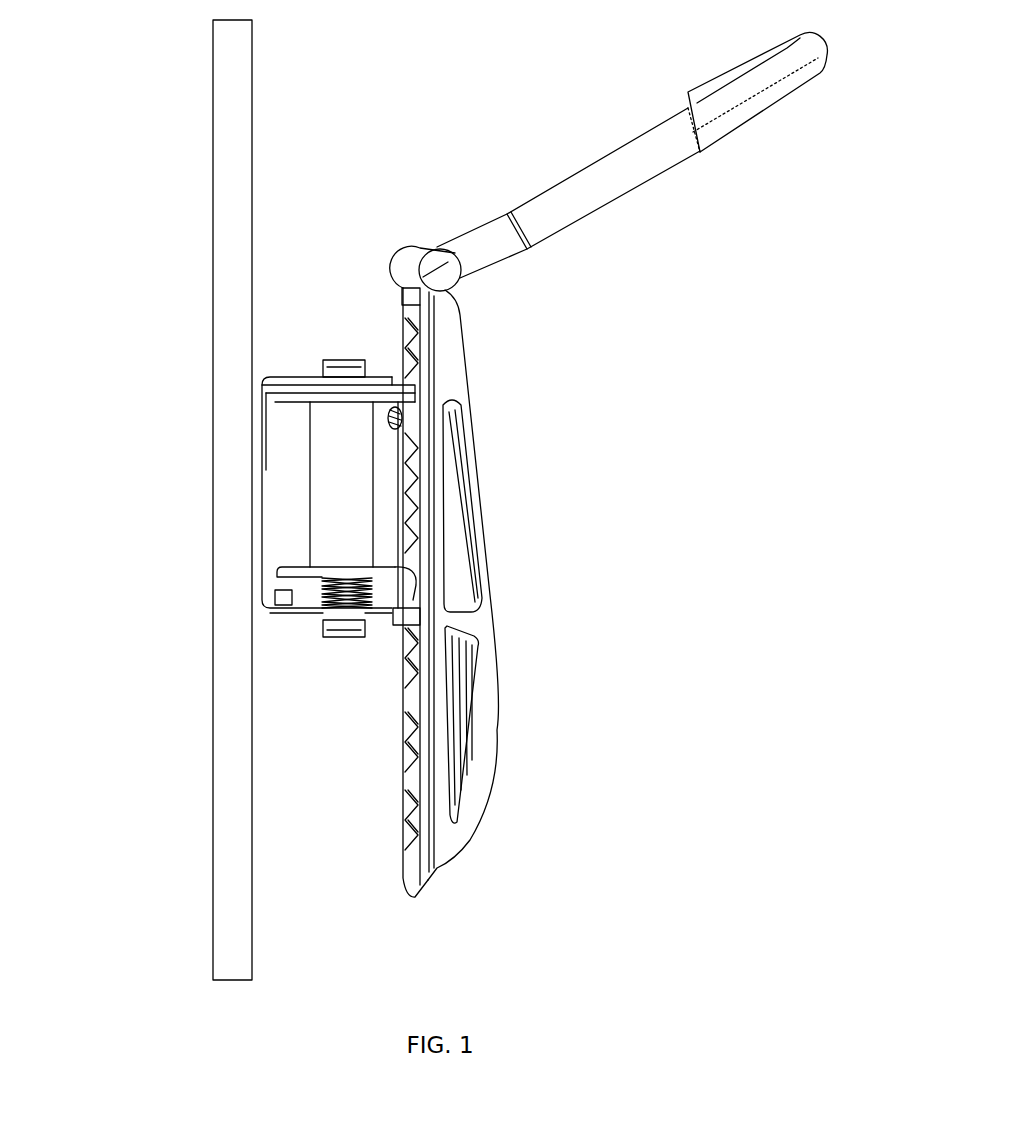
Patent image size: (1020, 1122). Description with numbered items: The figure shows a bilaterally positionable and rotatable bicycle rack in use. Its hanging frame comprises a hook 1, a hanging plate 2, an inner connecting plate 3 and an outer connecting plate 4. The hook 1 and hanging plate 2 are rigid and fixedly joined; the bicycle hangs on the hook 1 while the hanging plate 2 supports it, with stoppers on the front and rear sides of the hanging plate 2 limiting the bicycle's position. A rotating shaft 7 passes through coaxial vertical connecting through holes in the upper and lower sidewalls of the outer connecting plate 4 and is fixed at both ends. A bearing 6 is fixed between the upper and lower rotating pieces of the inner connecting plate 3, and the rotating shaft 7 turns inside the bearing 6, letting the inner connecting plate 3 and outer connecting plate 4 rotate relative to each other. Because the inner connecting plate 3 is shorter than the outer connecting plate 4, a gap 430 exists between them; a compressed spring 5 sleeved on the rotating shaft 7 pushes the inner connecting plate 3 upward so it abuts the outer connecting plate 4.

The hook 1 is at (625, 172).
The hanging plate 2 is at (482, 620).
The inner connecting plate 3 is at (375, 382).
The outer connecting plate 4 is at (257, 518).
The gap 430 is at (322, 588).
The spring 5 is at (330, 613).
The bearing 6 is at (347, 428).
The rotating shaft 7 is at (335, 365).